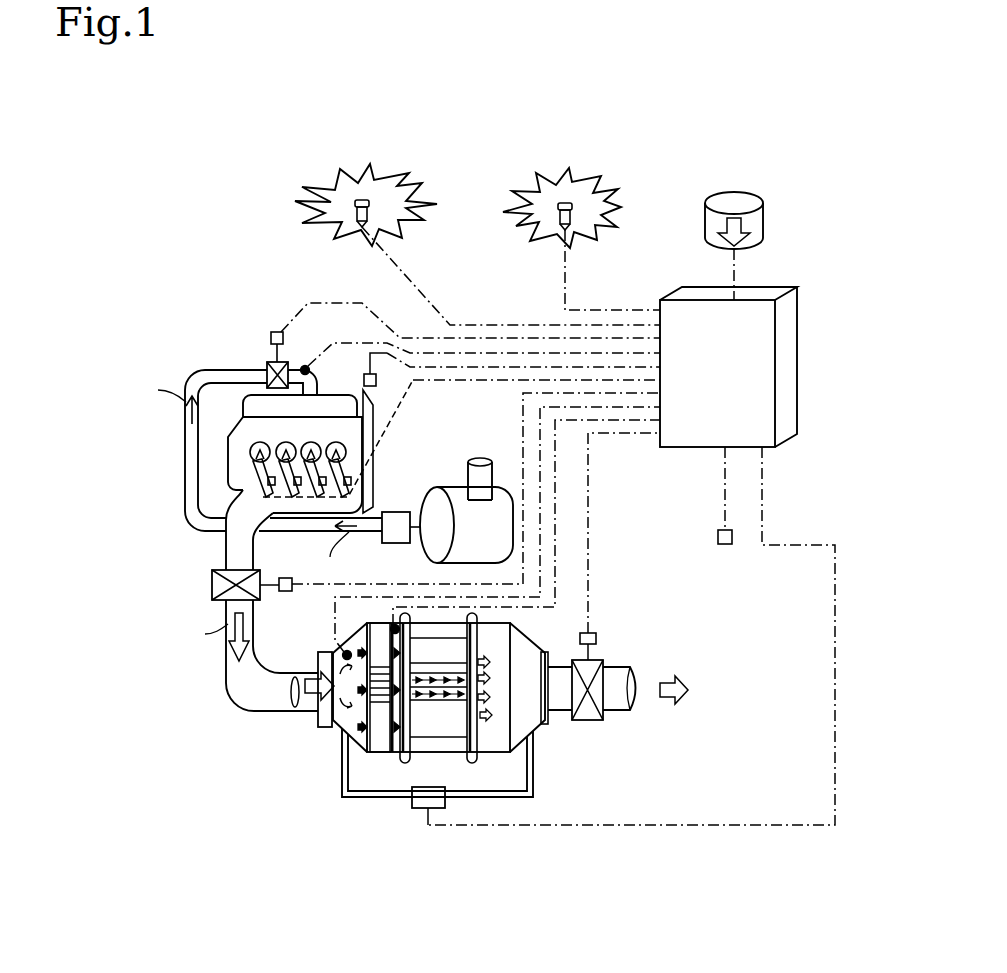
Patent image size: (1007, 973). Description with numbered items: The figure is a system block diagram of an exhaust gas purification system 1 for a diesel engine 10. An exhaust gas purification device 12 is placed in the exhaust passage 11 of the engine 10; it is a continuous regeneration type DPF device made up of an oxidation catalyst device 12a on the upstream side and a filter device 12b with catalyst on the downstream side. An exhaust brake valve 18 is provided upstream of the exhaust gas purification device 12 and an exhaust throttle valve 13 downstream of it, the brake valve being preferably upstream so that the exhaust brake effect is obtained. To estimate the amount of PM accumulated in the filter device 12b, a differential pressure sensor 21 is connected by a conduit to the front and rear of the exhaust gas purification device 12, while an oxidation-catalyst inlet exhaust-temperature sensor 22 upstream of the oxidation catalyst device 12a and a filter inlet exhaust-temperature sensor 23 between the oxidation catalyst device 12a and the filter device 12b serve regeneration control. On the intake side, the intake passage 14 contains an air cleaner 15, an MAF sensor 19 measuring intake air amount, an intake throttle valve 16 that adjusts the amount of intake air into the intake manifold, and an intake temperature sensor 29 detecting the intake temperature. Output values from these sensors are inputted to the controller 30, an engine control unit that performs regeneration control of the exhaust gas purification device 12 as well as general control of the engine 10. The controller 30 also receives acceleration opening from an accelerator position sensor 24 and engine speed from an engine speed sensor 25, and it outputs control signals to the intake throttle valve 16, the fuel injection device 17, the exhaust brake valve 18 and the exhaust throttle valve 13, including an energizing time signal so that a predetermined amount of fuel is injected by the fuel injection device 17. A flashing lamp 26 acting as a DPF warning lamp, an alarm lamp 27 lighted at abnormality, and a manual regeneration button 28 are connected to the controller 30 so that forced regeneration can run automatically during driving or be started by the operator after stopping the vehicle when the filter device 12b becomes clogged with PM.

The exhaust gas purification system 1 is at (684, 207).
The diesel engine 10 is at (242, 412).
The exhaust passage 11 is at (246, 697).
The exhaust gas purification device 12 is at (512, 752).
The oxidation catalyst device 12a is at (380, 727).
The filter device with catalyst 12b is at (447, 727).
The exhaust throttle valve 13 is at (606, 661).
The intake passage 14 is at (185, 428).
The air cleaner 15 is at (458, 498).
The intake throttle valve 16 is at (268, 360).
The fuel injection device 17 is at (255, 470).
The exhaust brake valve 18 is at (212, 585).
The MAF sensor 19 is at (398, 511).
The differential pressure sensor 21 is at (424, 800).
The oxidation-catalyst inlet exhaust-temperature sensor 22 is at (344, 651).
The filter inlet exhaust-temperature sensor 23 is at (391, 624).
The accelerator position sensor 24 is at (725, 548).
The engine speed sensor 25 is at (367, 374).
The flashing lamp 26 is at (361, 200).
The alarm lamp 27 is at (565, 203).
The manual regeneration button 28 is at (752, 195).
The intake temperature sensor 29 is at (305, 365).
The controller 30 is at (790, 377).